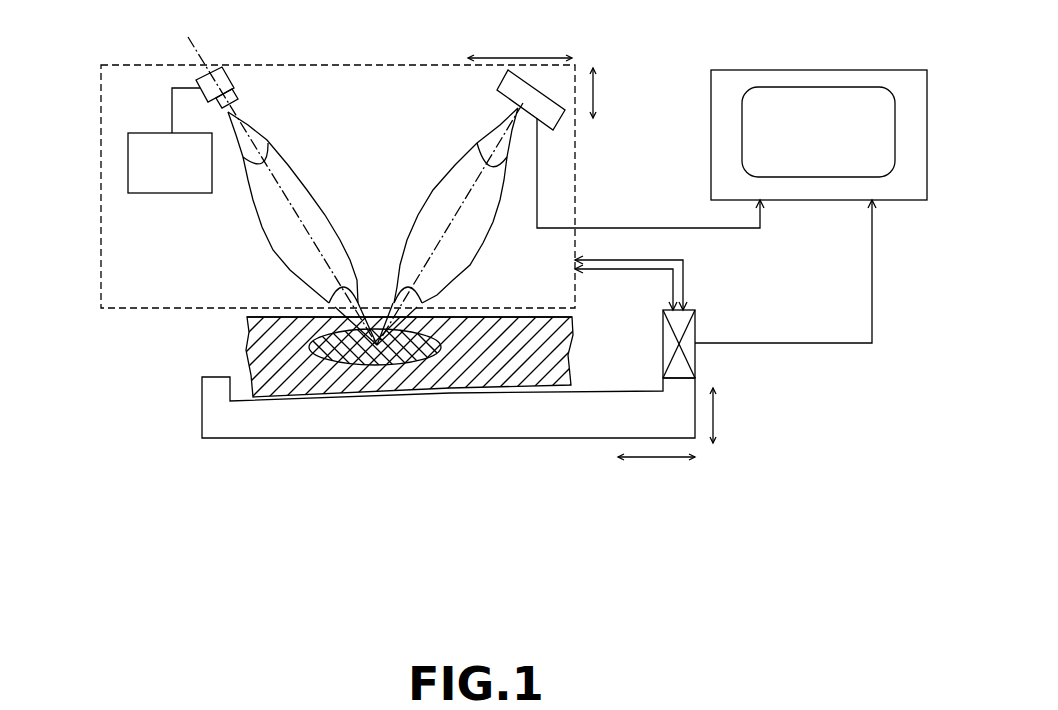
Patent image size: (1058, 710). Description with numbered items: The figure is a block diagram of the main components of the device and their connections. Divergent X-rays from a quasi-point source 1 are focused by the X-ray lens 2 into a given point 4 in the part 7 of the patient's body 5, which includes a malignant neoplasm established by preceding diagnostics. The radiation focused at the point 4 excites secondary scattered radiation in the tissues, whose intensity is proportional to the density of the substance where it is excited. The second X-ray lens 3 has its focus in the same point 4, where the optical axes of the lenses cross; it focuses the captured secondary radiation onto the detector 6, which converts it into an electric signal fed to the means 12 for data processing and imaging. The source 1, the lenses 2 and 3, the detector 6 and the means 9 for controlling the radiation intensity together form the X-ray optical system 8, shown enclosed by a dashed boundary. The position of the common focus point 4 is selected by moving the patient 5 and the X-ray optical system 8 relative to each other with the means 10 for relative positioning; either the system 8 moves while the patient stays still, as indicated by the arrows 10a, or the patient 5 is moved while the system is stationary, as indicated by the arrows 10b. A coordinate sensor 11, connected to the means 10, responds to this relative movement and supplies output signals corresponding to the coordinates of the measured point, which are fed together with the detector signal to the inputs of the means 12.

The quasi-point X-ray source 1 is at (203, 82).
The X-ray lens 2 is at (268, 199).
The second X-ray lens 3 is at (480, 207).
The focus point 4 is at (300, 316).
The patient's body 5 is at (242, 330).
The radiation detector 6 is at (555, 117).
The part of the patient's body 7 is at (372, 348).
The X-ray optical system 8 is at (553, 285).
The means for controlling the radiation intensity 9 is at (145, 160).
The means for relative positioning 10 is at (220, 422).
The arrows showing movement of the X-ray optical system 10a is at (587, 58).
The arrows showing movement of the patient 10b is at (708, 452).
The coordinate sensor 11 is at (695, 335).
The means for data processing and imaging 12 is at (770, 190).